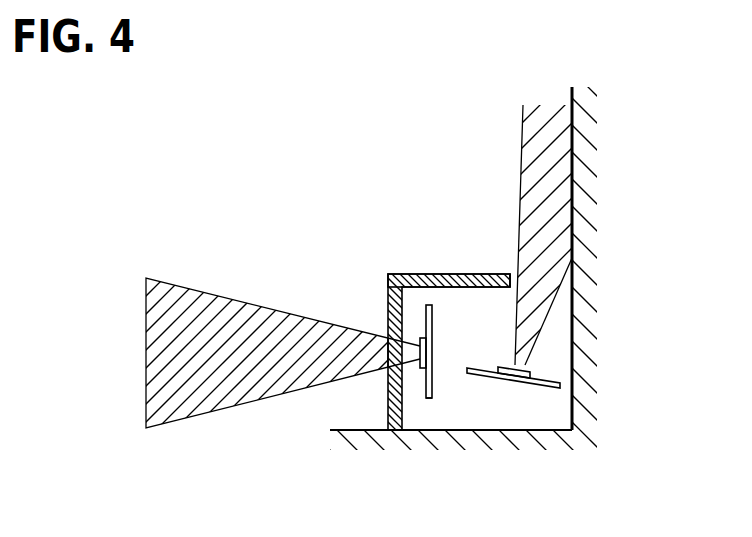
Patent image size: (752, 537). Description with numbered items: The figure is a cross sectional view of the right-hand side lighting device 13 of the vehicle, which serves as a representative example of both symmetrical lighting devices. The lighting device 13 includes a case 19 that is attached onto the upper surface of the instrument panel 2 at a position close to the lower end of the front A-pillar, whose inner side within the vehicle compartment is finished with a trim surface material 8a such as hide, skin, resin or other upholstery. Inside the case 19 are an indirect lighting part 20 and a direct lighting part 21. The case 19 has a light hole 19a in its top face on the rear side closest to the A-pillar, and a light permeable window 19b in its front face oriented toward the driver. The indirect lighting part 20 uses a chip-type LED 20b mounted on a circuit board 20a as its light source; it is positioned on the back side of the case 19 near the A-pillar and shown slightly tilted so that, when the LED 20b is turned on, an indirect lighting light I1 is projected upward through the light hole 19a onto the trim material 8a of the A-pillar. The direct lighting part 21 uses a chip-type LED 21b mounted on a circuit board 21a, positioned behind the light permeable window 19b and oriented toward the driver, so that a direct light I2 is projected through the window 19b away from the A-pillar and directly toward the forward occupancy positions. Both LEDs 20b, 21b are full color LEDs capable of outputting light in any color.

The instrument panel 2 is at (363, 430).
The surface material 8a is at (572, 140).
The lighting device 13 is at (383, 262).
The case 19 is at (438, 275).
The light hole 19a is at (510, 283).
The light permeable window 19b is at (392, 345).
The indirect lighting part 20 is at (568, 403).
The circuit board 20a is at (548, 378).
The chip-type LED 20b is at (530, 366).
The direct lighting part 21 is at (448, 398).
The circuit board 21a is at (433, 390).
The chip-type LED 21b is at (418, 337).
The indirect lighting light I1 is at (542, 185).
The direct light I2 is at (192, 285).